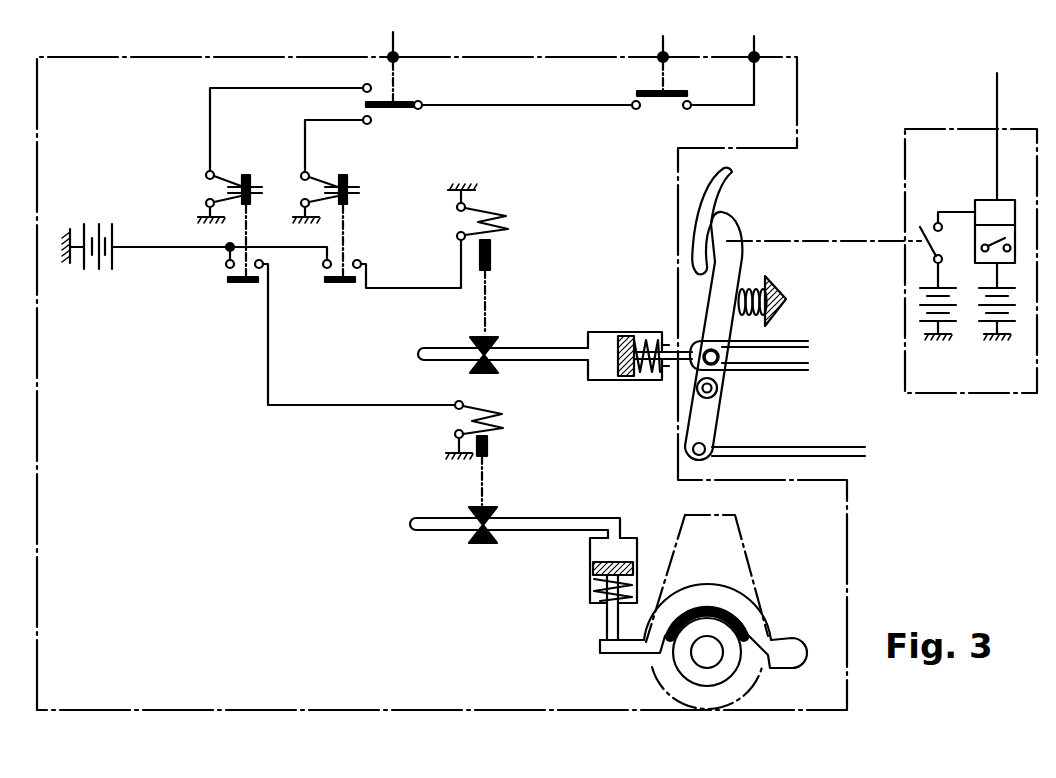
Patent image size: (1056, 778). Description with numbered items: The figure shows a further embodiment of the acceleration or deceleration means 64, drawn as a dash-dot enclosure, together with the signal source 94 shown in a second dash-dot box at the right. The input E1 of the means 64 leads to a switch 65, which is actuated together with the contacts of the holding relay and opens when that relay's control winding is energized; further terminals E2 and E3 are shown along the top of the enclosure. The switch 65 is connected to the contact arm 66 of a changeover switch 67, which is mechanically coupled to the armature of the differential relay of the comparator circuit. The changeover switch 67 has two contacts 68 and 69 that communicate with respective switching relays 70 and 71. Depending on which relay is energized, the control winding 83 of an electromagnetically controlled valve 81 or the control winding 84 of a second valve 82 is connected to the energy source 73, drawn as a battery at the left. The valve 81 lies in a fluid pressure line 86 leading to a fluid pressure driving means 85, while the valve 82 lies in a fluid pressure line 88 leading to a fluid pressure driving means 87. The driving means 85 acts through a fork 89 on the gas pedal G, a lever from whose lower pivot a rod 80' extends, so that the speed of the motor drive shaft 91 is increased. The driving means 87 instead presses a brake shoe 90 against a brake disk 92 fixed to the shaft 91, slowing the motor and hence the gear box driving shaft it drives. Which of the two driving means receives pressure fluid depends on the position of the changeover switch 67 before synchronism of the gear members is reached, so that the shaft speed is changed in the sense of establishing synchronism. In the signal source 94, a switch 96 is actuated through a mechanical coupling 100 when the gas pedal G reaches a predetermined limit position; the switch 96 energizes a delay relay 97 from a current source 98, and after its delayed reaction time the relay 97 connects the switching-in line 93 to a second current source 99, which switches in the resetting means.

The acceleration or deceleration means 64 is at (120, 57).
The switch 65 is at (652, 106).
The contact arm 66 is at (399, 108).
The changeover switch 67 is at (405, 96).
The contact 68 is at (363, 85).
The contact 69 is at (364, 124).
The switching relay 70 is at (205, 192).
The switching relay 71 is at (315, 186).
The energy source 73 is at (100, 271).
The rod 80' is at (788, 437).
The electromagnetically controlled valve 81 is at (488, 321).
The electromagnetically controlled valve 82 is at (488, 493).
The control winding 83 is at (490, 213).
The control winding 84 is at (485, 413).
The fluid pressure driving means 85 is at (610, 331).
The fluid pressure line 86 is at (557, 347).
The fluid pressure driving means 87 is at (631, 537).
The fluid pressure line 88 is at (568, 525).
The fork 89 is at (780, 369).
The brake shoe 90 is at (748, 613).
The drive shaft 91 is at (702, 655).
The brake disk 92 is at (732, 660).
The switching-in line 93 is at (997, 97).
The signal source 94 is at (974, 395).
The switch 96 is at (933, 222).
The delay relay 97 is at (1016, 206).
The current source 98 is at (918, 302).
The current source 99 is at (1012, 313).
The mechanical coupling 100 is at (842, 240).
The gas pedal G is at (722, 224).
The input E1 is at (768, 43).
The terminal E2 is at (409, 43).
The terminal E3 is at (678, 43).